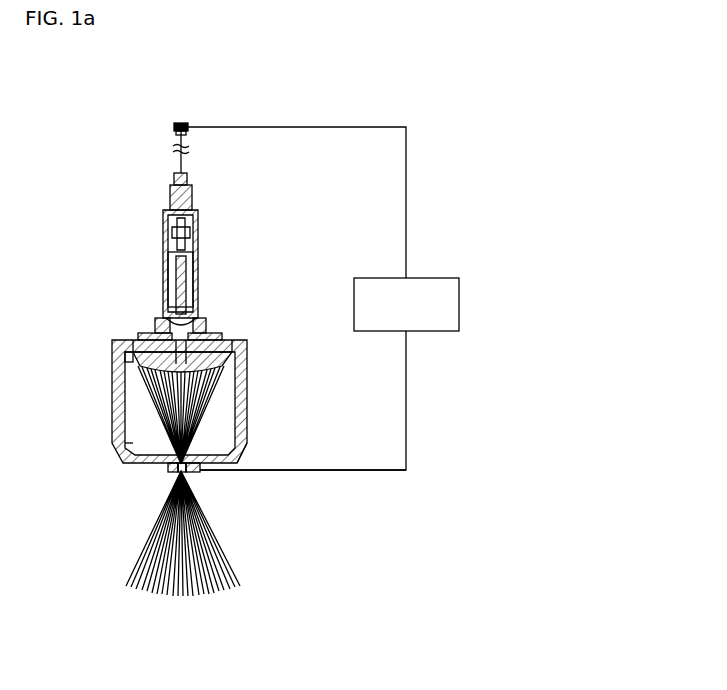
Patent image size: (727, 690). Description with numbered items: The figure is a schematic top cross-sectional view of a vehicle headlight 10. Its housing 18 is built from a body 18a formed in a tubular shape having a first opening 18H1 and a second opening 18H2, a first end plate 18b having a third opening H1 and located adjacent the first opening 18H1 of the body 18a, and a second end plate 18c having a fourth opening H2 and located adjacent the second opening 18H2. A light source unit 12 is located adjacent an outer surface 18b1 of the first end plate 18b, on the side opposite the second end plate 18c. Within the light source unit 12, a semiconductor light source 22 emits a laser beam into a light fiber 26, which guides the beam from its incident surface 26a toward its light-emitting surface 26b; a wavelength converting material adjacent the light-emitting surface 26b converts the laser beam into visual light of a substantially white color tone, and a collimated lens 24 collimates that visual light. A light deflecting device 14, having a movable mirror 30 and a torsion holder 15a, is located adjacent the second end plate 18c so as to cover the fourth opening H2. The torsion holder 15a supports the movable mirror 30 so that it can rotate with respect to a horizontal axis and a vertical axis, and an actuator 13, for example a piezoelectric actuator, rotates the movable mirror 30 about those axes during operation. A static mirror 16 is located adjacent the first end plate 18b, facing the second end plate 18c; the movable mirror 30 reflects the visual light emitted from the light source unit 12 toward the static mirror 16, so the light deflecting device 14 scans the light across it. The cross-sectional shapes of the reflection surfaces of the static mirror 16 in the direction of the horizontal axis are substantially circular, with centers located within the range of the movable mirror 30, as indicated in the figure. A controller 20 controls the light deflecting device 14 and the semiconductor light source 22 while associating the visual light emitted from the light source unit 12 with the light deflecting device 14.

The vehicle headlight 10 is at (273, 228).
The light source unit 12 is at (134, 250).
The actuator 13 is at (196, 470).
The light deflecting device 14 is at (195, 480).
The torsion holder 15a is at (198, 474).
The static mirror 16 is at (212, 352).
The housing 18 is at (190, 394).
The body 18a is at (254, 392).
The first end plate 18b is at (222, 340).
The outer surface 18b1 is at (238, 338).
The second end plate 18c is at (237, 462).
The first opening 18H1 is at (127, 355).
The second opening 18H2 is at (112, 450).
The controller 20 is at (441, 278).
The semiconductor light source 22 is at (182, 122).
The collimated lens 24 is at (197, 278).
The light fiber 26 is at (190, 167).
The incident surface 26a is at (175, 130).
The light-emitting surface 26b is at (161, 255).
The movable mirror 30 is at (195, 460).
The third opening H1 is at (153, 327).
The fourth opening H2 is at (170, 477).